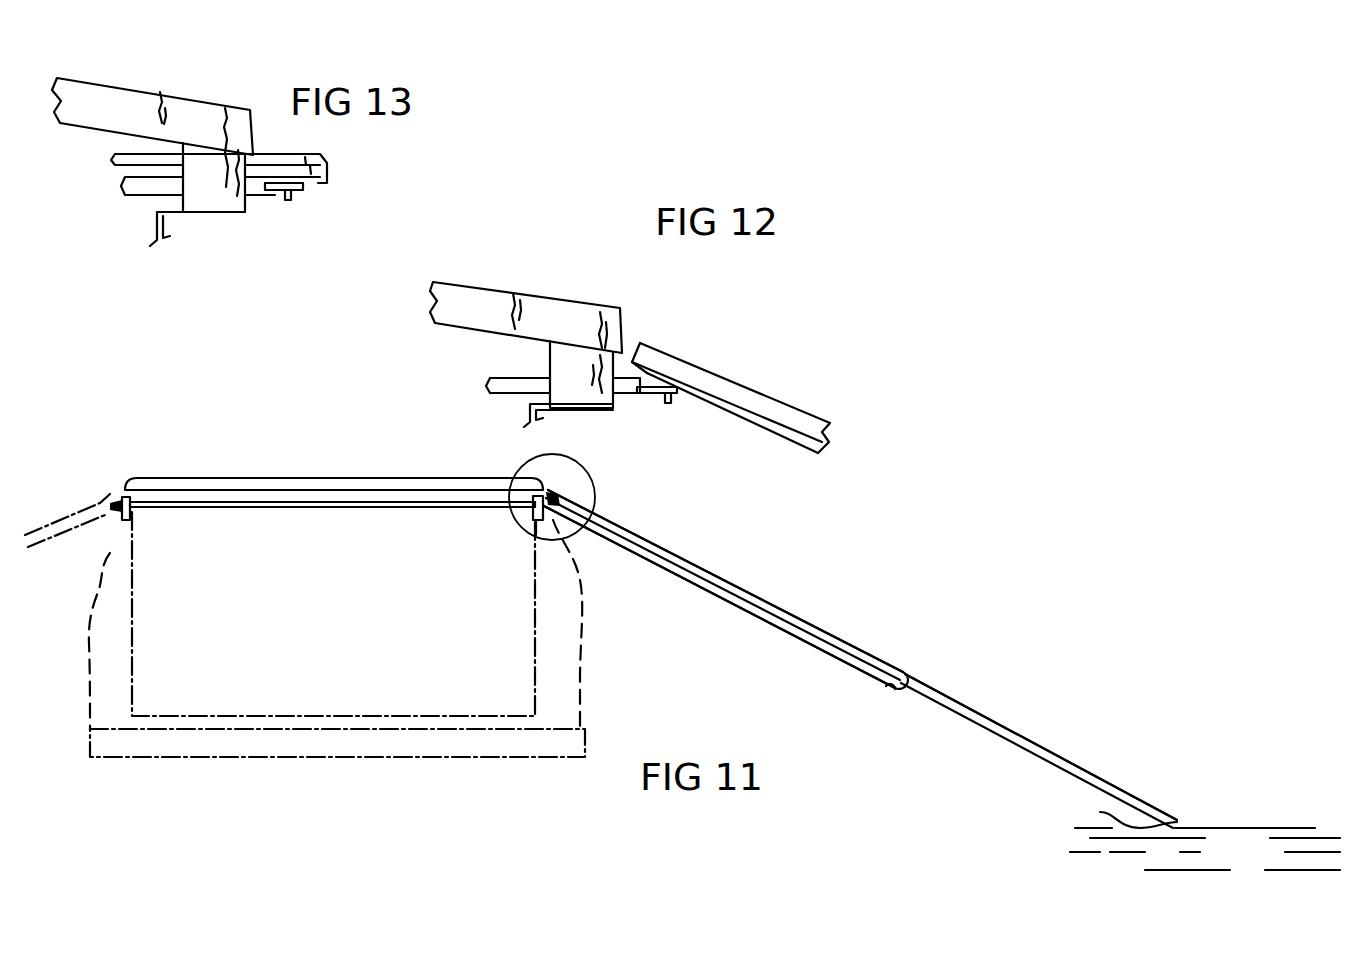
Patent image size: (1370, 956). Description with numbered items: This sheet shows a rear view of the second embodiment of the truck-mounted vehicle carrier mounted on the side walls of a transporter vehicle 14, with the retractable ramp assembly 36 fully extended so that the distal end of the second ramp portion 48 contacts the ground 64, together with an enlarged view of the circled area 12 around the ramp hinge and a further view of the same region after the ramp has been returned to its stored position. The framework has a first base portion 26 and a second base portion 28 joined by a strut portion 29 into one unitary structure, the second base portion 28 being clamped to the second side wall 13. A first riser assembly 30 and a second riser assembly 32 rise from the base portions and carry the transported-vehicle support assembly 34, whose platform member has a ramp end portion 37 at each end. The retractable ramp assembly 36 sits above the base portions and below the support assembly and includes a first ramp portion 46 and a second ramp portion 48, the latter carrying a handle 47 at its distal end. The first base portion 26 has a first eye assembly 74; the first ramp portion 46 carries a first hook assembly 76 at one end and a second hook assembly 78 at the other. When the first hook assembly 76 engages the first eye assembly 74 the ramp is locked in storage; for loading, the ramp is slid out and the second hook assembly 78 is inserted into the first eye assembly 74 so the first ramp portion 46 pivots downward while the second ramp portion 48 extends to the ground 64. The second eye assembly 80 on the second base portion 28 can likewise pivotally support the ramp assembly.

In FIG. 11, the circled area 12 is at (597, 496).
In FIG. 11, the second side wall 13 is at (117, 555).
In FIG. 11, the transporter vehicle 14 is at (432, 738).
In FIG. 12, the first base portion 26 is at (527, 383).
In FIG. 11, the first base portion 26 is at (473, 510).
In FIG. 11, the second base portion 28 is at (153, 510).
In FIG. 11, the strut portion 29 is at (338, 513).
In FIG. 13, the first riser assembly 30 is at (218, 200).
In FIG. 12, the first riser assembly 30 is at (560, 355).
In FIG. 11, the first riser assembly 30 is at (545, 490).
In FIG. 11, the second riser assembly 32 is at (112, 497).
In FIG. 13, the transported-vehicle support assembly 34 is at (158, 97).
In FIG. 12, the transported-vehicle support assembly 34 is at (518, 294).
In FIG. 11, the transported-vehicle support assembly 34 is at (280, 479).
In FIG. 13, the retractable ramp assembly 36 is at (330, 168).
In FIG. 12, the retractable ramp assembly 36 is at (796, 404).
In FIG. 11, the retractable ramp assembly 36 is at (912, 667).
In FIG. 13, the ramp end portion 37 is at (228, 118).
In FIG. 12, the ramp end portion 37 is at (600, 333).
In FIG. 11, the ramp end portion 37 is at (130, 488).
In FIG. 12, the first ramp portion 46 is at (713, 372).
In FIG. 11, the first ramp portion 46 is at (825, 630).
In FIG. 11, the handle 47 is at (1100, 812).
In FIG. 11, the second ramp portion 48 is at (952, 705).
In FIG. 11, the ground 64 is at (1265, 860).
In FIG. 13, the first eye assembly 74 is at (282, 200).
In FIG. 12, the first eye assembly 74 is at (657, 394).
In FIG. 13, the first hook assembly 76 is at (293, 197).
In FIG. 11, the first hook assembly 76 is at (883, 683).
In FIG. 12, the second hook assembly 78 is at (668, 399).
In FIG. 11, the second hook assembly 78 is at (560, 517).
In FIG. 11, the second eye assembly 80 is at (110, 507).